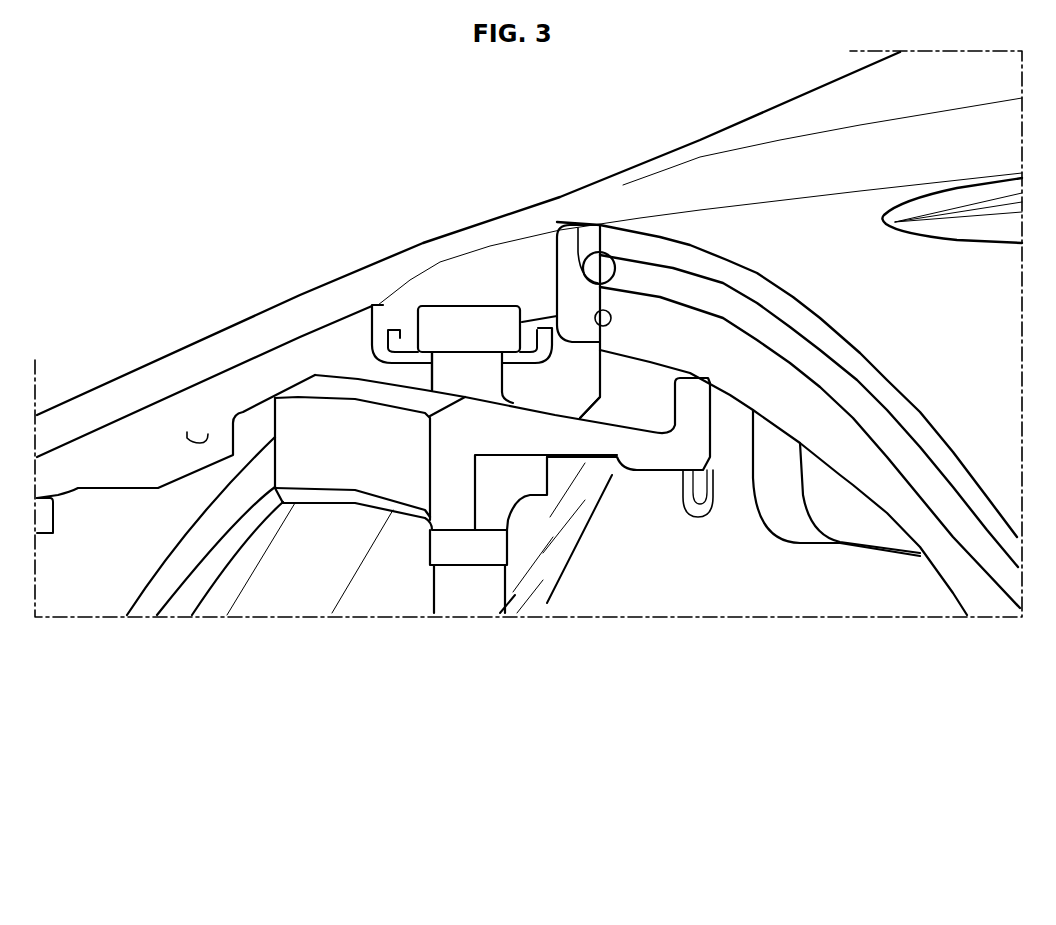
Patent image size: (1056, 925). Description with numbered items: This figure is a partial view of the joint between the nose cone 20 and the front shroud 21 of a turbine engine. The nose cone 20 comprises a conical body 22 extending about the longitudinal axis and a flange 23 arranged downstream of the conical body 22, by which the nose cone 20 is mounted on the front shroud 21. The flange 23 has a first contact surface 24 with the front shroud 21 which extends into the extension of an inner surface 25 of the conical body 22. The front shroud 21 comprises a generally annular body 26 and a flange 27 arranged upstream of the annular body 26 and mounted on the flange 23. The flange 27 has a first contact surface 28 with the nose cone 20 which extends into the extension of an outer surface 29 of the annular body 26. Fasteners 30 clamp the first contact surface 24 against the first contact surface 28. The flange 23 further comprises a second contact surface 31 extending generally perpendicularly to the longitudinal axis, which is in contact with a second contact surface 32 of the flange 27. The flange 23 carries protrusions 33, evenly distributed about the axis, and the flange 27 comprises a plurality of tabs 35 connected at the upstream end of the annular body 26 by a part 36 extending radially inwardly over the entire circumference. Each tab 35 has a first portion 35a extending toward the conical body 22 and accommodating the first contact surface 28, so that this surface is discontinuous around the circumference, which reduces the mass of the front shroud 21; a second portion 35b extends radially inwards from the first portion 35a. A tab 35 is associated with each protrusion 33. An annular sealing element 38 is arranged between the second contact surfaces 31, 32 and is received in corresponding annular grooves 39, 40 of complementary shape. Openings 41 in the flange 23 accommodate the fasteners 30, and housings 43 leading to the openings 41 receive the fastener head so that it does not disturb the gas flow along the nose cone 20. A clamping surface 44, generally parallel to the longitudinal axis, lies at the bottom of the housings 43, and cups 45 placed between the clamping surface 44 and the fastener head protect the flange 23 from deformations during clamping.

The nose cone 20 is at (106, 378).
The front shroud 21 is at (728, 122).
The conical body 22 is at (173, 362).
The flange 23 is at (402, 267).
The first contact surface 24 is at (358, 387).
The inner surface 25 is at (208, 430).
The annular body 26 is at (680, 340).
The flange 27 is at (698, 405).
The first contact surface 28 is at (530, 400).
The outer surface 29 is at (672, 178).
The fastener 30 is at (495, 300).
The second contact surface 31 is at (573, 320).
The second contact surface 32 is at (597, 305).
The protrusion 33 is at (572, 378).
The tab 35 is at (504, 437).
The first portion 35a is at (572, 442).
The second portion 35b is at (453, 492).
The part 36 is at (678, 185).
The annular sealing element 38 is at (618, 253).
The annular groove 39 is at (596, 312).
The annular groove 40 is at (735, 317).
The opening 41 is at (428, 378).
The housing 43 is at (458, 265).
The clamping surface 44 is at (370, 306).
The cup 45 is at (403, 340).